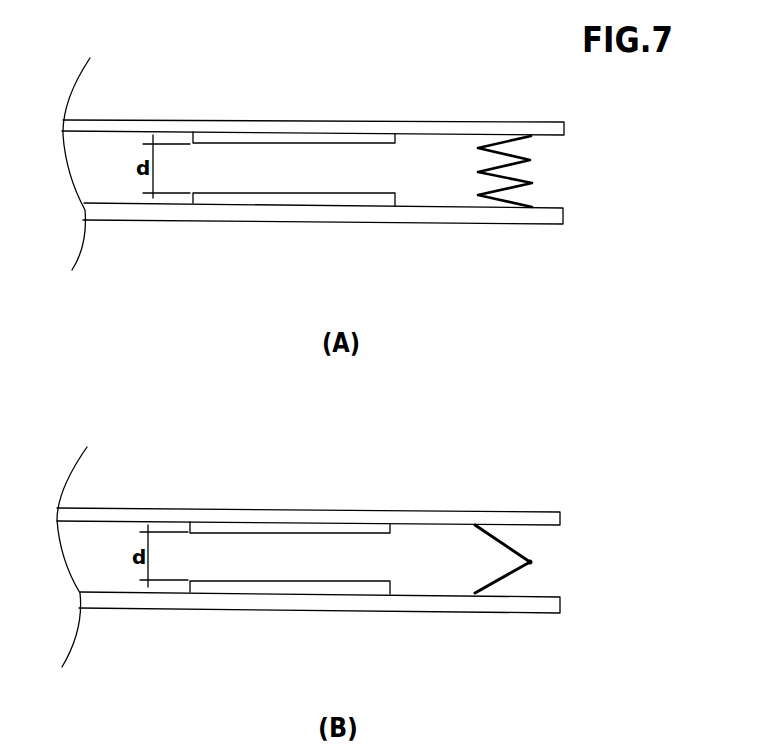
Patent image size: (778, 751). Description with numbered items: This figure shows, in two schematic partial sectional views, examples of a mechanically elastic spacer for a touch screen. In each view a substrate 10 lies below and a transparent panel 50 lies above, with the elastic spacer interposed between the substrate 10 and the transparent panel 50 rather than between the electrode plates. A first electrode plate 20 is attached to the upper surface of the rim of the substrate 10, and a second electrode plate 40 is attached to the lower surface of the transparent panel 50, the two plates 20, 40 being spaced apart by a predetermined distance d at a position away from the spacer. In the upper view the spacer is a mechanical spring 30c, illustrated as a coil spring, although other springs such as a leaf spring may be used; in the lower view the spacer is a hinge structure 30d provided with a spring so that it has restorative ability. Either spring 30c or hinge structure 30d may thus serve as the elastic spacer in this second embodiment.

The substrate 10 is at (357, 218).
The first electrode plate 20 is at (257, 197).
The mechanical spring 30c is at (532, 160).
The hinge structure 30d is at (531, 560).
The second electrode plate 40 is at (248, 133).
The transparent panel 50 is at (420, 127).